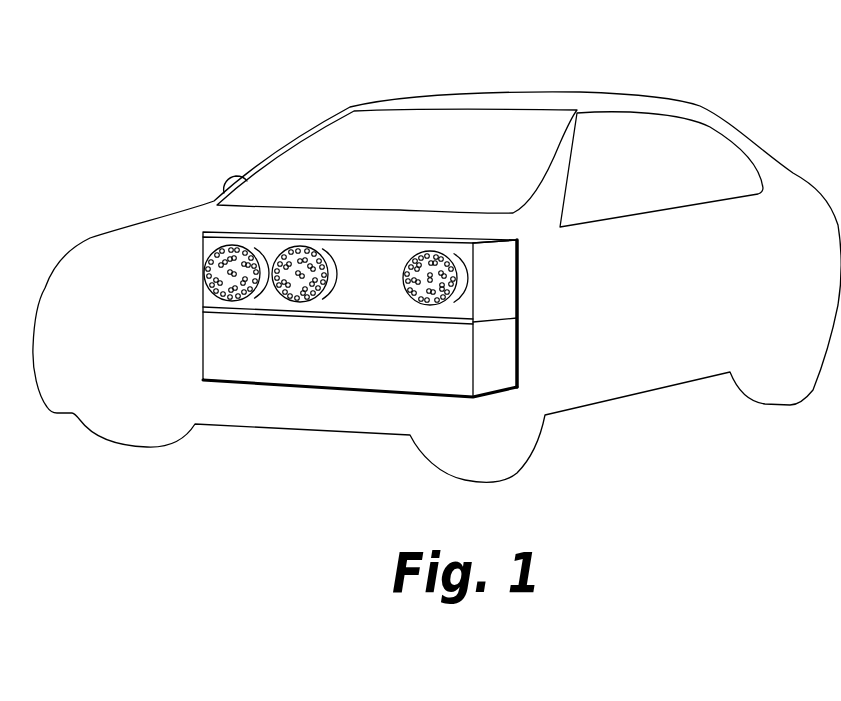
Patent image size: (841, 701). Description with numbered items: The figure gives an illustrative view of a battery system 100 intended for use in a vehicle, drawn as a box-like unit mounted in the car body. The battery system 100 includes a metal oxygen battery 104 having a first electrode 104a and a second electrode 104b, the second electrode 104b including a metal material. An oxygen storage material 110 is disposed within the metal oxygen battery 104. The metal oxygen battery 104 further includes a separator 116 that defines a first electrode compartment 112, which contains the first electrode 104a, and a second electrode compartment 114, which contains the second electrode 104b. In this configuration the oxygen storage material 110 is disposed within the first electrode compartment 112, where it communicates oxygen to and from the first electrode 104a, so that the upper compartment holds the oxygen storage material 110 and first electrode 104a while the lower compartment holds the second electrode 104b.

The battery system 100 is at (527, 128).
The metal oxygen battery 104 is at (407, 314).
The first electrode 104a is at (391, 292).
The second electrode 104b is at (358, 364).
The oxygen storage material 110 is at (278, 304).
The first electrode compartment 112 is at (519, 281).
The second electrode compartment 114 is at (519, 356).
The separator 116 is at (519, 318).